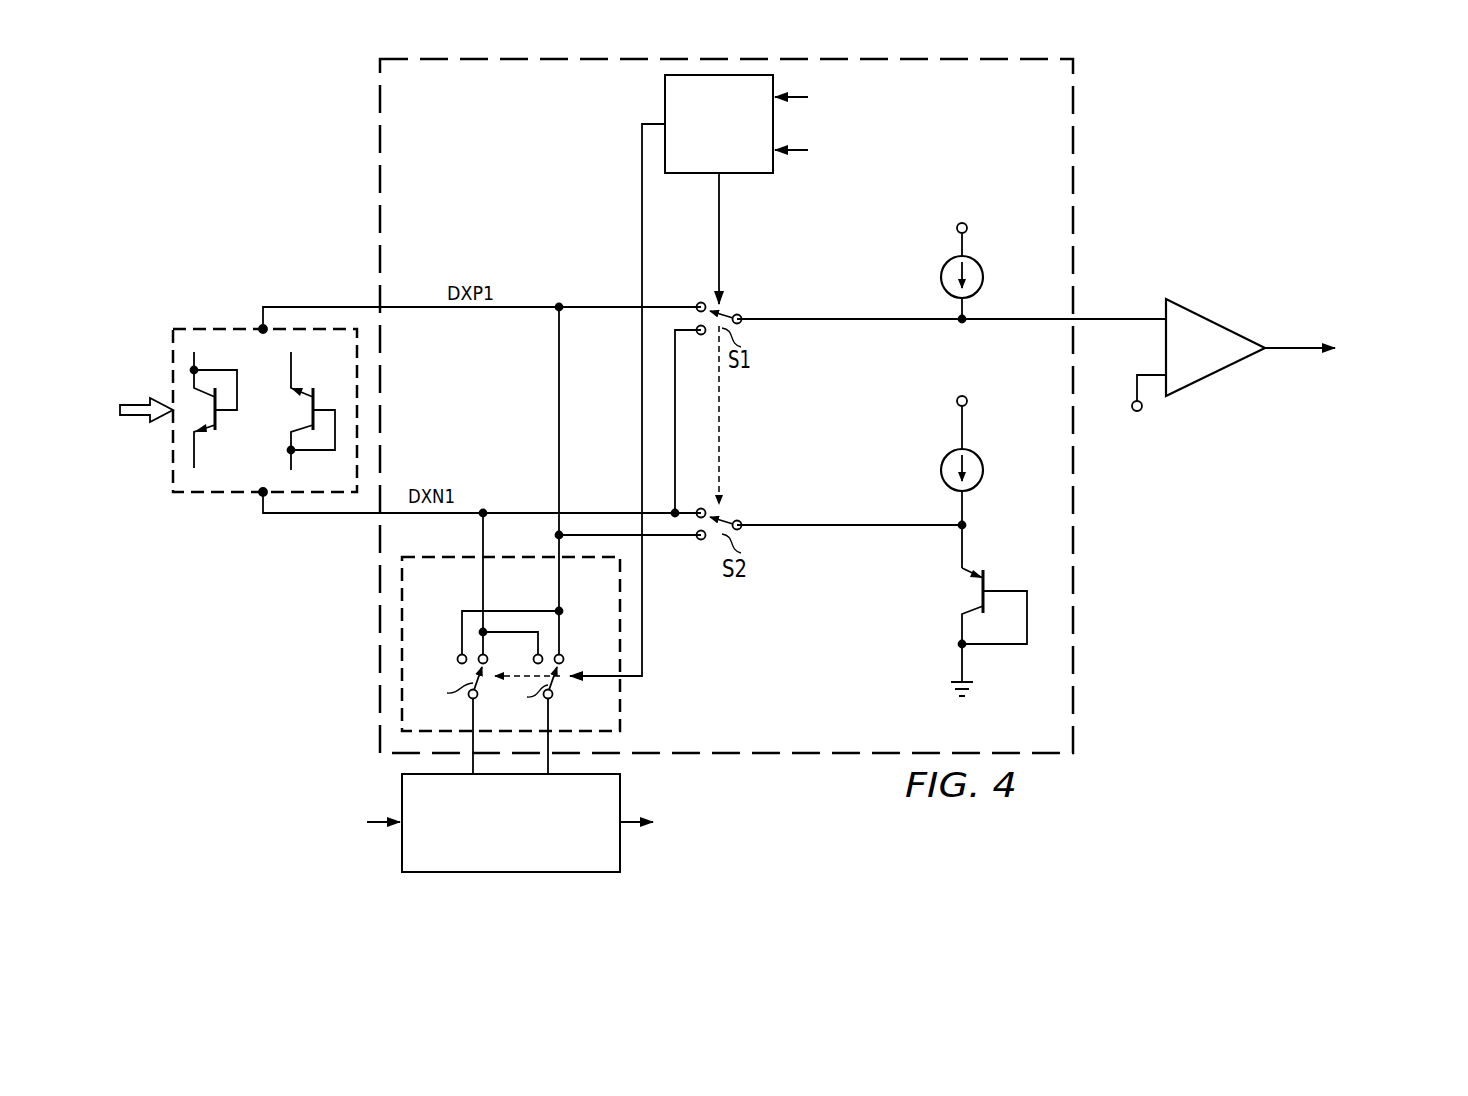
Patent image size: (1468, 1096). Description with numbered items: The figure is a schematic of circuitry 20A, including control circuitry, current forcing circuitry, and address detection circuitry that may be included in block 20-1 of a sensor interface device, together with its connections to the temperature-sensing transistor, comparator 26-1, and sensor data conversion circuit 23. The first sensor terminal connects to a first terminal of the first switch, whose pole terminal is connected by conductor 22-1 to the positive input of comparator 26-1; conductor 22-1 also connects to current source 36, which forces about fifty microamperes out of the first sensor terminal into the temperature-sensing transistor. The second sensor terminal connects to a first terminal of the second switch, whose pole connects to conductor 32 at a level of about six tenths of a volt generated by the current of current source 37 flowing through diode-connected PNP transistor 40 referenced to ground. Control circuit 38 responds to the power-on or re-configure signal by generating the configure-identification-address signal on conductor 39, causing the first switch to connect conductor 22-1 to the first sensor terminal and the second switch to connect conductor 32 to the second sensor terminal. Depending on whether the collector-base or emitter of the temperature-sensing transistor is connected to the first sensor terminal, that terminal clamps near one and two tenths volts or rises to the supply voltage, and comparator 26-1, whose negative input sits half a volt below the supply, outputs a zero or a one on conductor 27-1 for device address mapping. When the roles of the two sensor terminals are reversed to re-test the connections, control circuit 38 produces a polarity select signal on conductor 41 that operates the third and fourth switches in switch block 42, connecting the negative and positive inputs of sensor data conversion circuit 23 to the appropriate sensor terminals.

The circuitry 20A is at (303, 122).
The block 20-1 is at (536, 159).
The control circuit 38 is at (733, 152).
The conductor 41 is at (641, 211).
The conductor 39 is at (720, 212).
The current source 36 is at (941, 278).
The current source 37 is at (941, 470).
The conductor 32 is at (846, 528).
The diode-connected PNP transistor 40 is at (986, 578).
The switch block 42 is at (625, 707).
The sensor data conversion circuit 23 is at (497, 873).
The conductor 22-1 is at (1116, 318).
The comparator 26-1 is at (1235, 305).
The conductor 27-1 is at (1292, 347).